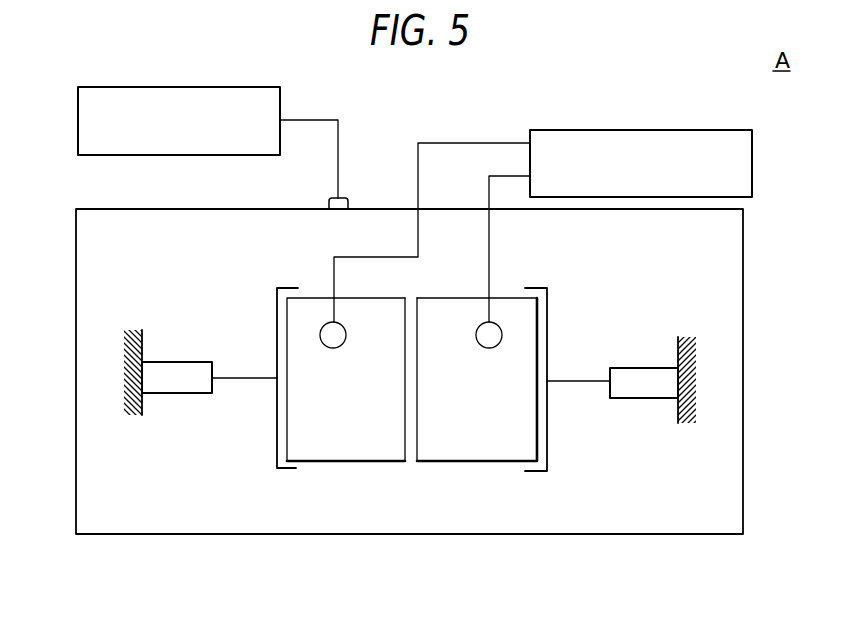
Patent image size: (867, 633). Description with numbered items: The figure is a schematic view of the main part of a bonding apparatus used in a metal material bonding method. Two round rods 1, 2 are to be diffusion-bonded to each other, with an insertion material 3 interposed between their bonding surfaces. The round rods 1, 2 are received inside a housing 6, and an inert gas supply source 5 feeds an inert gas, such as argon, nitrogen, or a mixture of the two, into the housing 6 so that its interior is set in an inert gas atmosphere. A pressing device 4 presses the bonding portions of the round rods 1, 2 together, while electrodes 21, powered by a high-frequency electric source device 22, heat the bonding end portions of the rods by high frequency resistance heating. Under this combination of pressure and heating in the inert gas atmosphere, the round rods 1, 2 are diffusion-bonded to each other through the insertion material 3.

The round rod 1 is at (310, 461).
The round rod 2 is at (510, 461).
The insertion material 3 is at (410, 461).
The pressing device 4 is at (173, 393).
The inert gas supply source 5 is at (78, 120).
The housing 6 is at (700, 534).
The electrodes 21 is at (326, 322).
The high-frequency electric source device 22 is at (752, 165).